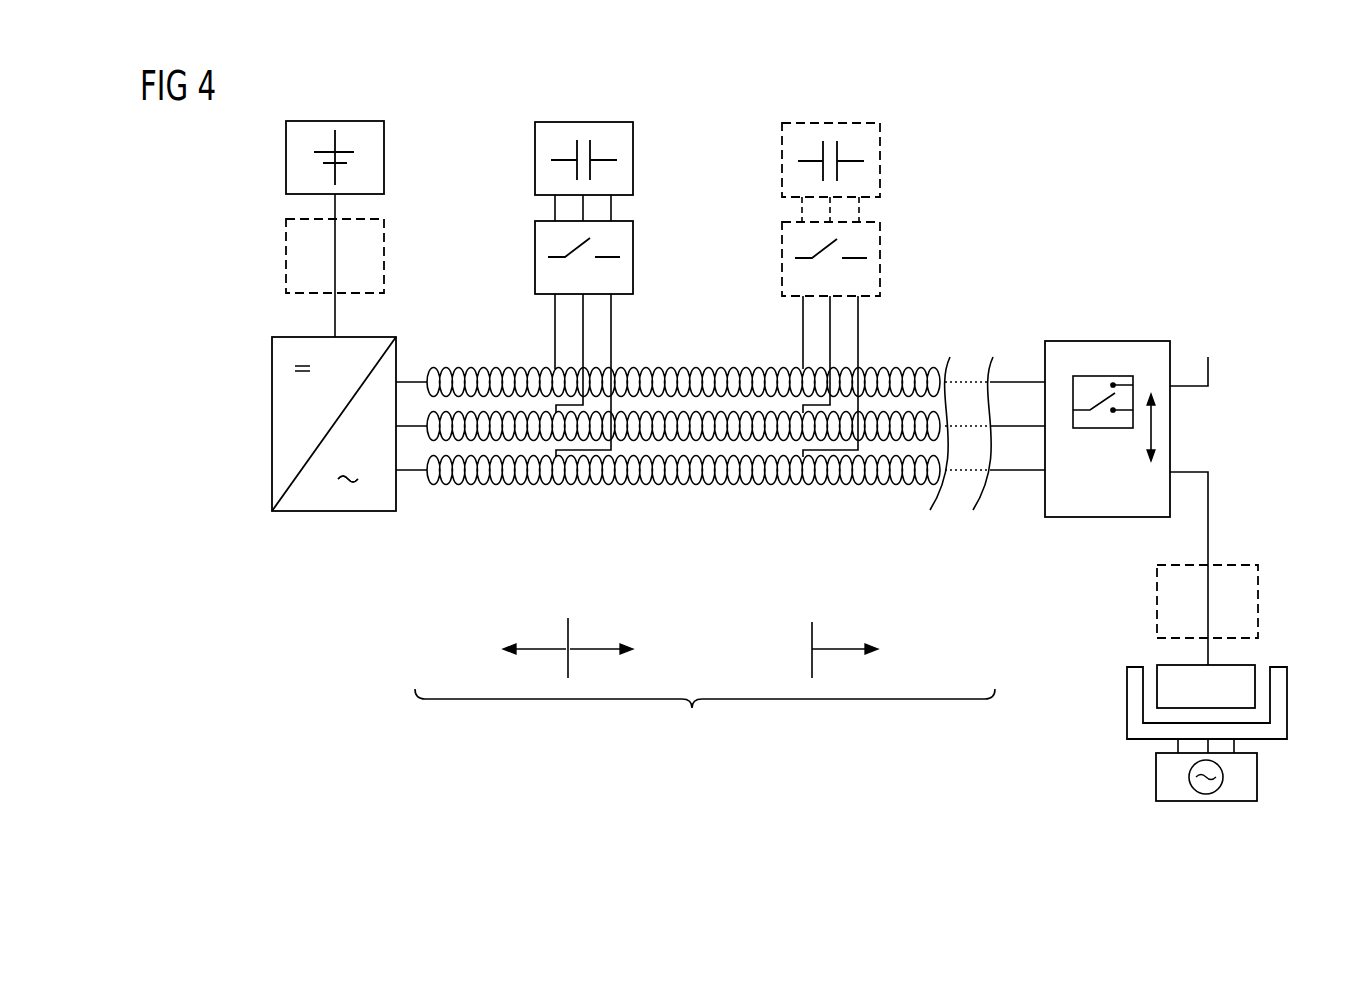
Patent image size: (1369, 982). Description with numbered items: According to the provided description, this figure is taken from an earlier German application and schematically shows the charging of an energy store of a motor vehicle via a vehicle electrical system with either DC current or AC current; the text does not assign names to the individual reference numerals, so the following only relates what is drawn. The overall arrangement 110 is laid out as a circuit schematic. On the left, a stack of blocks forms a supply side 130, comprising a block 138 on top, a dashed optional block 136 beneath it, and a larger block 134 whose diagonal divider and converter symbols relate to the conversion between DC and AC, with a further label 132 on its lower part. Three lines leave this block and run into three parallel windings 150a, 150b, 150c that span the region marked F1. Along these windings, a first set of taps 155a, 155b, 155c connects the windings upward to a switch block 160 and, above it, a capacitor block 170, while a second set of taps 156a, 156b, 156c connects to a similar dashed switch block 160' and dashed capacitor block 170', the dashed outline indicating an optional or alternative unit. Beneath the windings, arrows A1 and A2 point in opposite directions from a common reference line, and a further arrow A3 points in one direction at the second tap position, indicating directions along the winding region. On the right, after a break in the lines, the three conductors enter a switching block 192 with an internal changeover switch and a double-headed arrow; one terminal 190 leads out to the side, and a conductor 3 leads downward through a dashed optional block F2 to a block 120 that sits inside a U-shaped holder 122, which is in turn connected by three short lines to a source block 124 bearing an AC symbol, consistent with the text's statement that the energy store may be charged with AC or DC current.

The induction heating apparatus 110 is at (706, 799).
The workpiece 120 is at (1176, 665).
The holder 122 is at (1127, 700).
The AC supply unit 124 is at (1156, 777).
The power supply unit 130 is at (242, 542).
The converter 132 is at (334, 500).
The inverter 134 is at (280, 422).
The optional DC unit 136 is at (286, 246).
The DC source / energy store 138 is at (286, 152).
The first coil section 150a is at (445, 368).
The second coil section 150b is at (666, 412).
The third coil section 150c is at (434, 487).
The first tap 155a is at (555, 369).
The second tap 155b is at (556, 415).
The third tap 155c is at (556, 457).
The first further tap 156a is at (803, 370).
The second further tap 156b is at (803, 414).
The third further tap 156c is at (803, 457).
The switching unit 160 is at (516, 257).
The further switching unit 160' is at (765, 259).
The capacitor unit 170 is at (516, 158).
The further capacitor unit 170' is at (765, 160).
The terminal 190 is at (1210, 377).
The switching device 192 is at (1108, 341).
The conductor 3 is at (1193, 508).
The first direction A1 is at (535, 649).
The second direction A2 is at (601, 662).
The third direction A3 is at (845, 651).
The coil arrangement region F1 is at (705, 717).
The optional unit F2 is at (1157, 593).